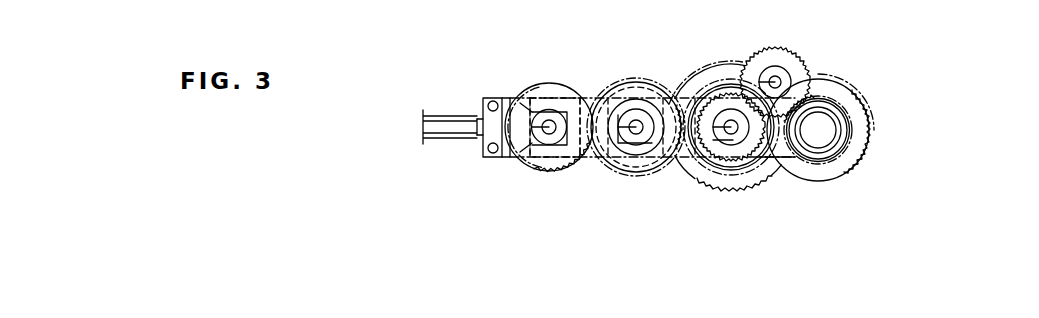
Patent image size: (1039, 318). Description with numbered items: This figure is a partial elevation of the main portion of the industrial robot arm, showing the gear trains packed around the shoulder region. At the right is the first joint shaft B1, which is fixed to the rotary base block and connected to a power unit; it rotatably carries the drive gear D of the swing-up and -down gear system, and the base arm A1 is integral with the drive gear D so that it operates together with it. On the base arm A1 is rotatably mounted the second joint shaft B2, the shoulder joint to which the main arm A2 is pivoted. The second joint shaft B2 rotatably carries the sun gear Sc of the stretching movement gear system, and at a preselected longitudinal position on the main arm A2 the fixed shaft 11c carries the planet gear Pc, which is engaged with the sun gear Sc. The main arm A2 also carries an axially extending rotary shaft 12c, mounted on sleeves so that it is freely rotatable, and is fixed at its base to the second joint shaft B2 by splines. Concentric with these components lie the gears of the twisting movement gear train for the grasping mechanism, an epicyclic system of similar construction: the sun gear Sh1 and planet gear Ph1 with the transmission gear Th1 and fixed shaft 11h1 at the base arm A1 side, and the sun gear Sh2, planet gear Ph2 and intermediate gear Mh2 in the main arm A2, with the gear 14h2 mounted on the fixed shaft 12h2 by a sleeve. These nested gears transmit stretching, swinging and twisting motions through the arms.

The rotary shaft 12c is at (430, 128).
The main arm A2 is at (445, 117).
The fixed shaft 12h2 is at (549, 120).
The gear 14h2 is at (548, 172).
The intermediate gear Mh2 is at (616, 100).
The planet gear Ph2 is at (648, 81).
The fixed shaft 11c is at (640, 121).
The planet gear Pc is at (635, 147).
The sun gear Sc is at (706, 186).
The sun gear Sh2 is at (730, 172).
The second joint shaft B2 is at (731, 119).
The transmission gear Th1 is at (758, 139).
The planet gear Ph1 is at (777, 48).
The fixed shaft 11h1 is at (779, 80).
The drive gear D is at (857, 84).
The base arm A1 is at (850, 110).
The first joint shaft B1 is at (828, 131).
The sun gear Sh1 is at (848, 143).